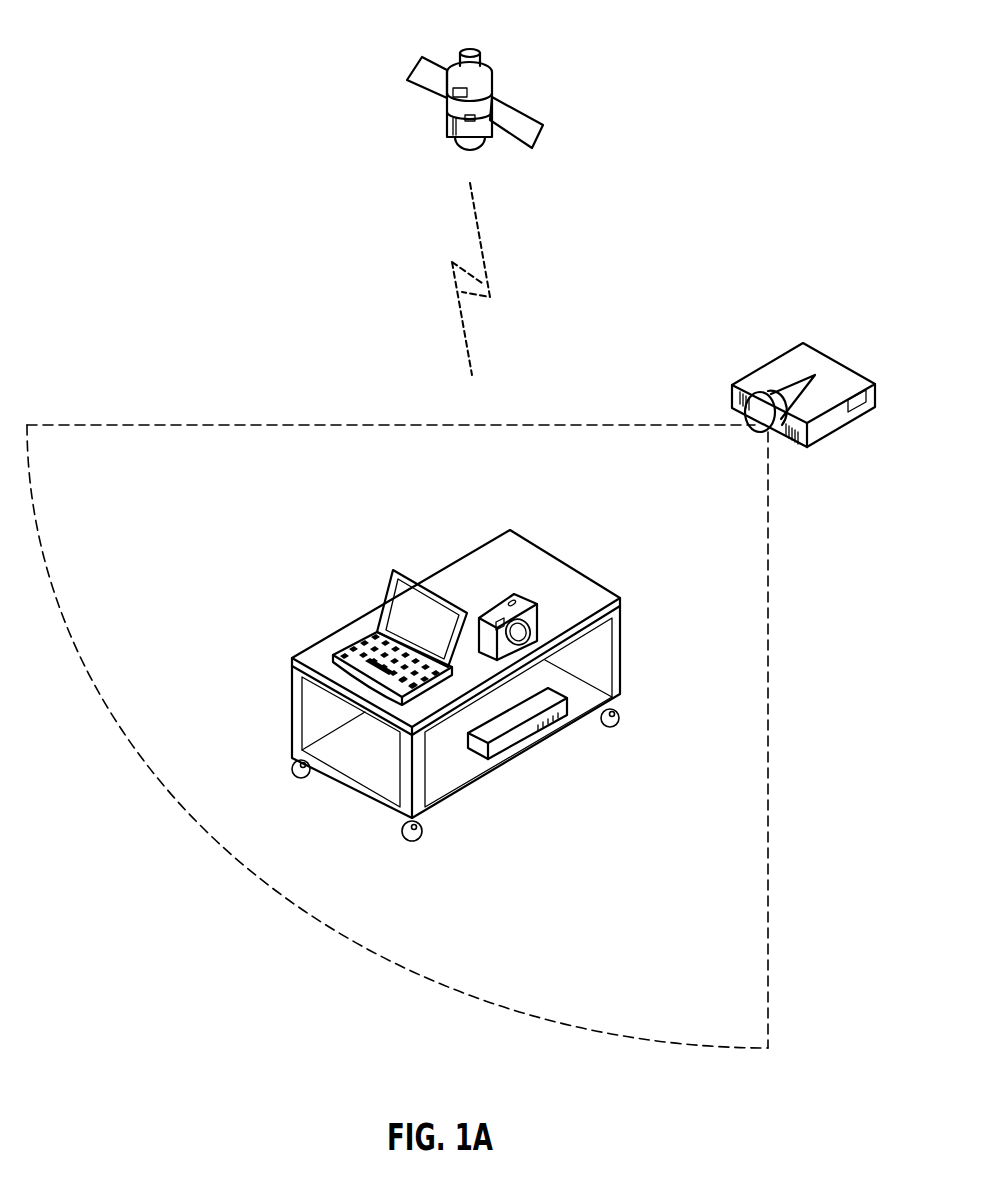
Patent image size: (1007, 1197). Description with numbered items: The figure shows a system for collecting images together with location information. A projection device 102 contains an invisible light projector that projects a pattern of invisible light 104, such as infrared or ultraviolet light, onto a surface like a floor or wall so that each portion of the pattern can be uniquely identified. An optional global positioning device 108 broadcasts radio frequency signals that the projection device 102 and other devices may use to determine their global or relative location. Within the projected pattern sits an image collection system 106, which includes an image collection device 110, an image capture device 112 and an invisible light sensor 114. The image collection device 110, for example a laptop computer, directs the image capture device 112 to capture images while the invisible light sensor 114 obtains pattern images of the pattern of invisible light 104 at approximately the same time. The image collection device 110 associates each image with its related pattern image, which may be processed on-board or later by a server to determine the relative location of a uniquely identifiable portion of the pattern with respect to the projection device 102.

The projection device 102 is at (780, 350).
The pattern of invisible light 104 is at (342, 425).
The image collection system 106 is at (300, 523).
The global positioning device 108 is at (525, 108).
The image collection device 110 is at (353, 642).
The image capture device 112 is at (536, 602).
The invisible light sensor 114 is at (567, 705).